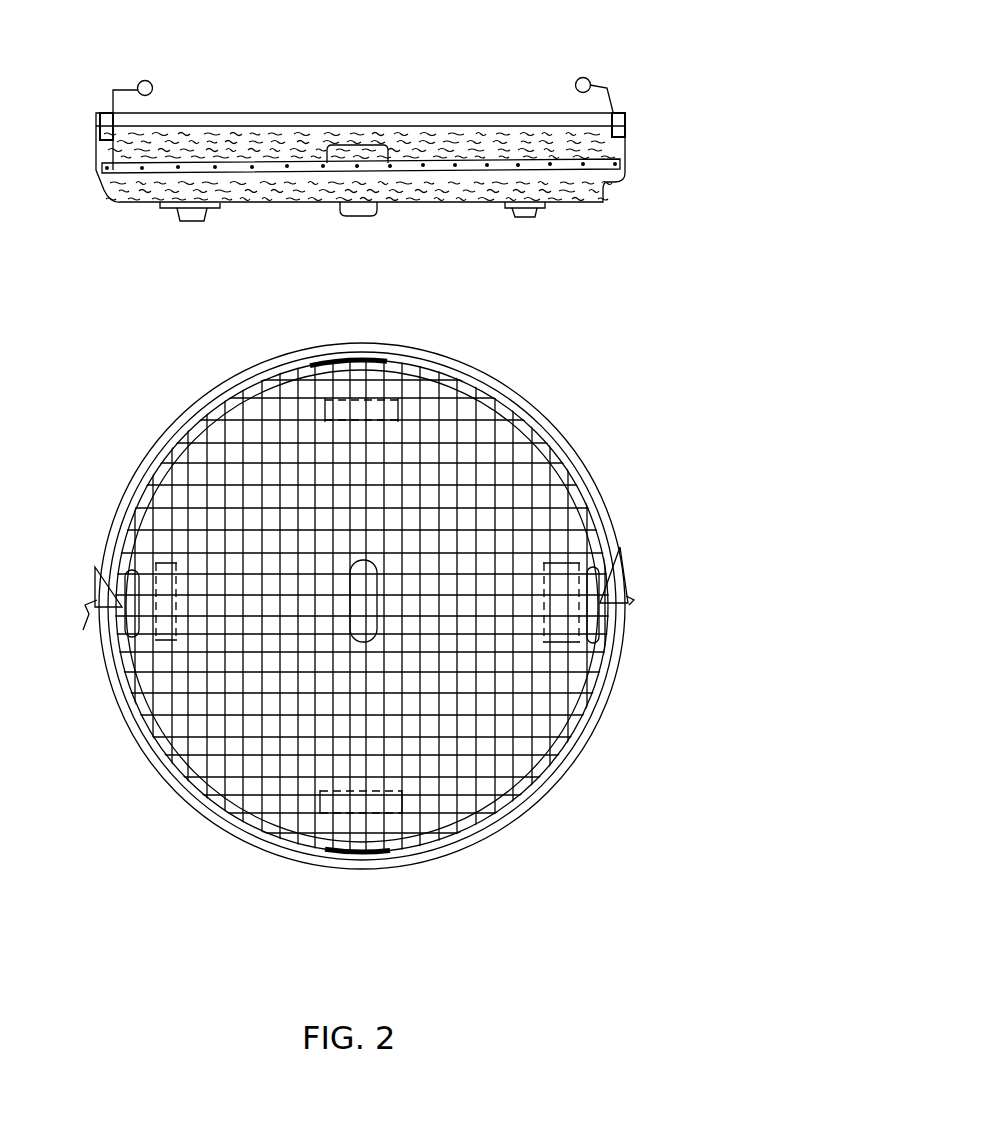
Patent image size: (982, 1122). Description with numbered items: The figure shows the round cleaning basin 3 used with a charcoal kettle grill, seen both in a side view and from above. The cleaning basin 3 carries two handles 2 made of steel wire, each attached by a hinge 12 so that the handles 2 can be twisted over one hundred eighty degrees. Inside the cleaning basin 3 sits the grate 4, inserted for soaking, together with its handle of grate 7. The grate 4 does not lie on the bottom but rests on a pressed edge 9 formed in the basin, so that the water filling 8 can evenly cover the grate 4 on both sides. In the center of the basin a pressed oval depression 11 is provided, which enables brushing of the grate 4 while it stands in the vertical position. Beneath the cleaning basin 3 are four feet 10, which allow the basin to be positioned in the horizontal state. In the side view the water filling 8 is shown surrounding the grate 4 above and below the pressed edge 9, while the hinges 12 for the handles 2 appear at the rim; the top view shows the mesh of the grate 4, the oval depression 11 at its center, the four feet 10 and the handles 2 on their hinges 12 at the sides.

The handles of cleaning basin 2 is at (113, 90).
The cleaning basin 3 is at (625, 120).
The grate 4 is at (606, 182).
The handle of grate 7 is at (360, 143).
The water filling 8 is at (558, 165).
The pressed edge 9 is at (623, 164).
The four feet 10 is at (540, 205).
The pressed oval depression 11 is at (375, 210).
The hinges for handles of cleaning basin 12 is at (96, 133).